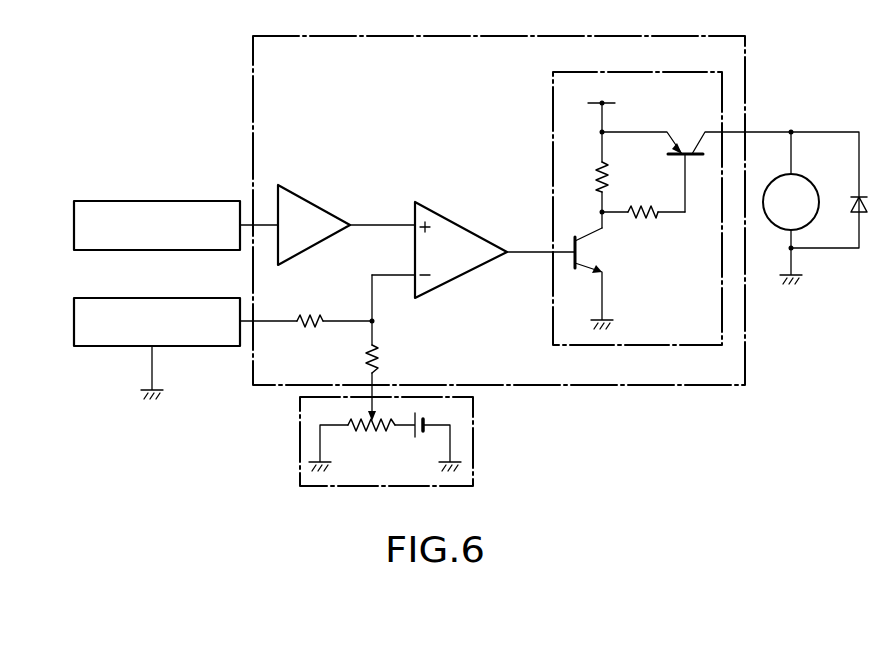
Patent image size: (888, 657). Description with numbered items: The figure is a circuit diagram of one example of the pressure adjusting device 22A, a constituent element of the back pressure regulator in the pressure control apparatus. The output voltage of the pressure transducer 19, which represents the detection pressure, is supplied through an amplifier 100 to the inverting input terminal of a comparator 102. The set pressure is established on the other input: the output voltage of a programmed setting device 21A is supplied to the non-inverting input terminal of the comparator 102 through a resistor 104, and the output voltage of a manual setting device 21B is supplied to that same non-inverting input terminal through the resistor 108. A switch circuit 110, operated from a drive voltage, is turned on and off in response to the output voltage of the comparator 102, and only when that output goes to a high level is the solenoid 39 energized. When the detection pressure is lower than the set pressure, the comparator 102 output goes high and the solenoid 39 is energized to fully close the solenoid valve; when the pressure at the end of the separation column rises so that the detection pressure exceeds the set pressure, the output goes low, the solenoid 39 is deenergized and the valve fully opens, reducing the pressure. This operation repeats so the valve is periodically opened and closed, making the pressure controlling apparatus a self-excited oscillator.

The pressure transducer 19 is at (138, 200).
The programmed setting device 21A is at (94, 350).
The manual setting device 21B is at (473, 425).
The pressure adjusting device 22A is at (746, 76).
The solenoid 39 is at (808, 175).
The amplifier 100 is at (318, 204).
The comparator 102 is at (470, 230).
The resistor 104 is at (307, 315).
The resistor 108 is at (378, 364).
The switch circuit 110 is at (553, 116).